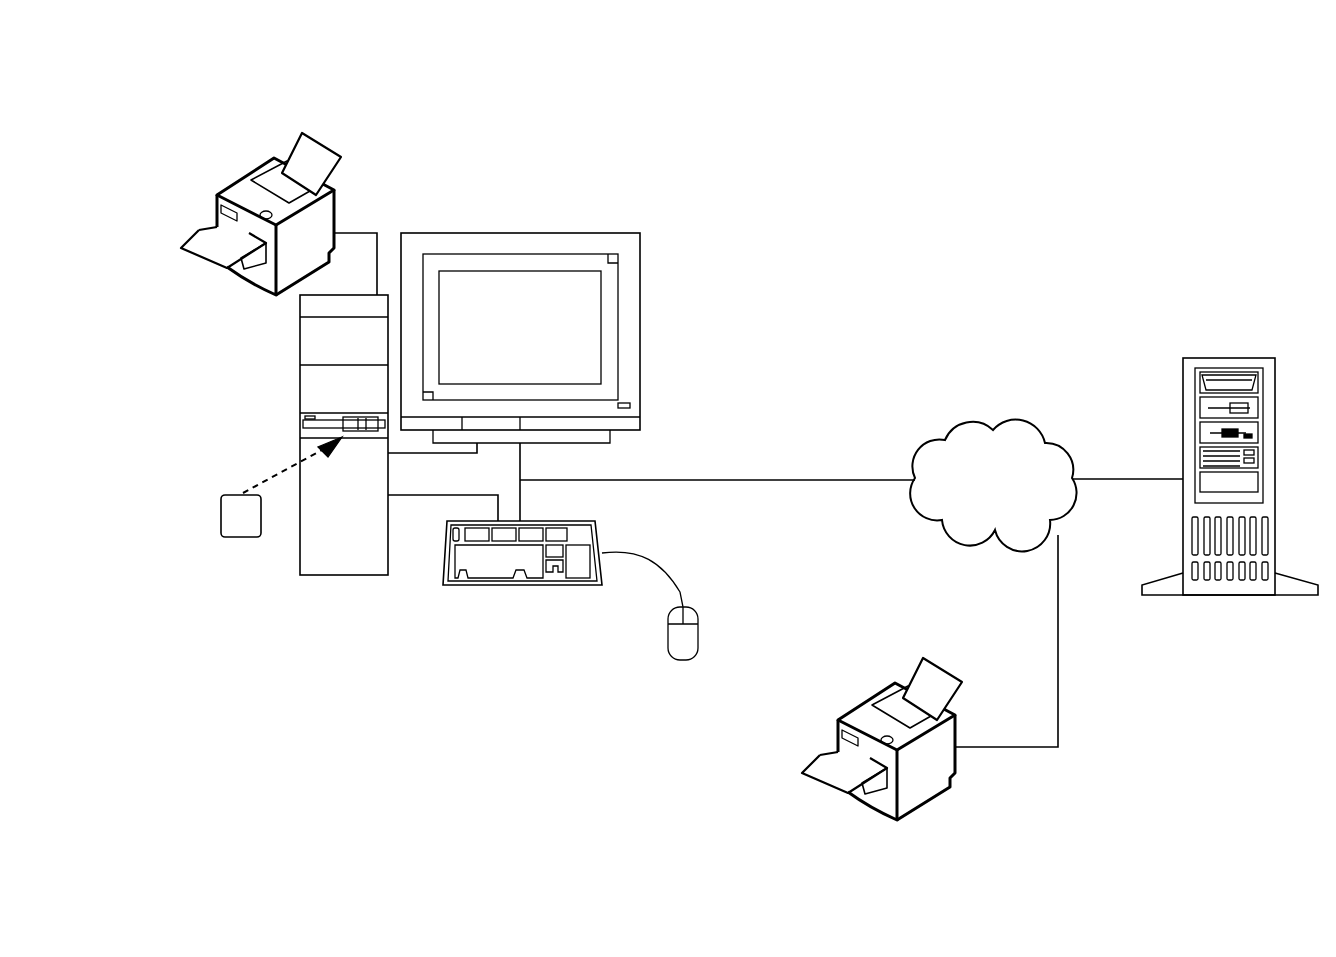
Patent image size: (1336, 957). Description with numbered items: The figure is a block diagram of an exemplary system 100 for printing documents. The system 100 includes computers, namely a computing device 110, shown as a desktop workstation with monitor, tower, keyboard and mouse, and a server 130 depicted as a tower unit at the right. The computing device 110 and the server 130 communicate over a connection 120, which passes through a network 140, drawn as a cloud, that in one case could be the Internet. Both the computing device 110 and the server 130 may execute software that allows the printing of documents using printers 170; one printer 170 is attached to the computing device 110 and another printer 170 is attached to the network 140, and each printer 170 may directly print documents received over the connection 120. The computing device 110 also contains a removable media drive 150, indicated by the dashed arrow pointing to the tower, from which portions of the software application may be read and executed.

The system 100 is at (355, 44).
The computing device 110 is at (570, 219).
The connection 120 is at (717, 468).
The server 130 is at (1228, 350).
The network 140 is at (974, 493).
The removable media drive 150 is at (281, 504).
The printer 170 is at (183, 245).